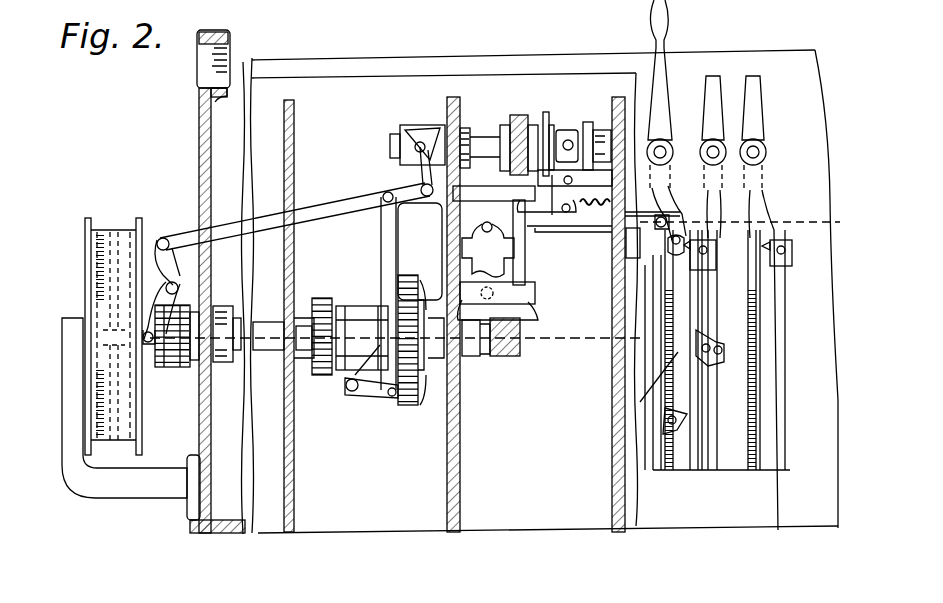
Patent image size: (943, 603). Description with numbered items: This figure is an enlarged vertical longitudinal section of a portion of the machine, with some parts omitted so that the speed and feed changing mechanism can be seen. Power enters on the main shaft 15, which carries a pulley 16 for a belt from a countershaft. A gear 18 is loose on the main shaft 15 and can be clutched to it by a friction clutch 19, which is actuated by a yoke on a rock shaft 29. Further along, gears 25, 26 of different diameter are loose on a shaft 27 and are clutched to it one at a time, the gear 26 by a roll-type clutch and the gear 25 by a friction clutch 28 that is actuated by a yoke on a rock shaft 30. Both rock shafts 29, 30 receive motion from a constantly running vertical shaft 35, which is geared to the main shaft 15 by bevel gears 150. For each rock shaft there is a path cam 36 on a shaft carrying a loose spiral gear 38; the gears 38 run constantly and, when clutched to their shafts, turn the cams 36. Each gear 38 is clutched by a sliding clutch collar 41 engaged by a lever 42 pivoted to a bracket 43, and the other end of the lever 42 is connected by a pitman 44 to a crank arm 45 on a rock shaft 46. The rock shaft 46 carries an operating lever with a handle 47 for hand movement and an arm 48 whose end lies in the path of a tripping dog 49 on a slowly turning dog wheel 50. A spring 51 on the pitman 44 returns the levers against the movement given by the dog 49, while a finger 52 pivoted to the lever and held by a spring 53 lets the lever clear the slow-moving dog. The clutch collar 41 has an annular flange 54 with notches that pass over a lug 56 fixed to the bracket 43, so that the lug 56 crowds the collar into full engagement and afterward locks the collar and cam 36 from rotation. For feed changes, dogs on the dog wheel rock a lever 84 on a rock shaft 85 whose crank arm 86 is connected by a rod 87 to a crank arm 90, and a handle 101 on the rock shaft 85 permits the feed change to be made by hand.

The main shaft 15 is at (269, 320).
The pulley 16 is at (106, 232).
The gear 18 is at (191, 390).
The friction clutch 19 is at (175, 365).
The gear 25 is at (320, 298).
The gear 26 is at (407, 288).
The shaft 27 is at (421, 360).
The friction clutch 28 is at (353, 394).
The rock shaft 29 is at (183, 288).
The rock shaft 30 is at (427, 197).
The vertical shaft 35 is at (525, 276).
The path cam 36 is at (424, 130).
The spiral gear 38 is at (158, 240).
The sliding clutch collar 41 is at (560, 174).
The lever 42 is at (570, 130).
The bracket 43 is at (575, 179).
The pitman 44 is at (620, 237).
The crank arm 45 is at (712, 208).
The rock shaft 46 is at (716, 150).
The handle 47 is at (733, 108).
The arm 48 is at (744, 222).
The tripping dog 49 is at (716, 346).
The dog wheel 50 is at (717, 350).
The spring 51 is at (580, 232).
The finger 52 is at (710, 266).
The spring 53 is at (660, 424).
The annular flange 54 is at (545, 112).
The lug 56 is at (514, 201).
The lever 84 is at (636, 250).
The rock shaft 85 is at (664, 152).
The crank arm 86 is at (655, 229).
The rod 87 is at (548, 226).
The crank arm 90 is at (488, 249).
The handle 101 is at (666, 66).
The bevel gears 150 is at (512, 324).